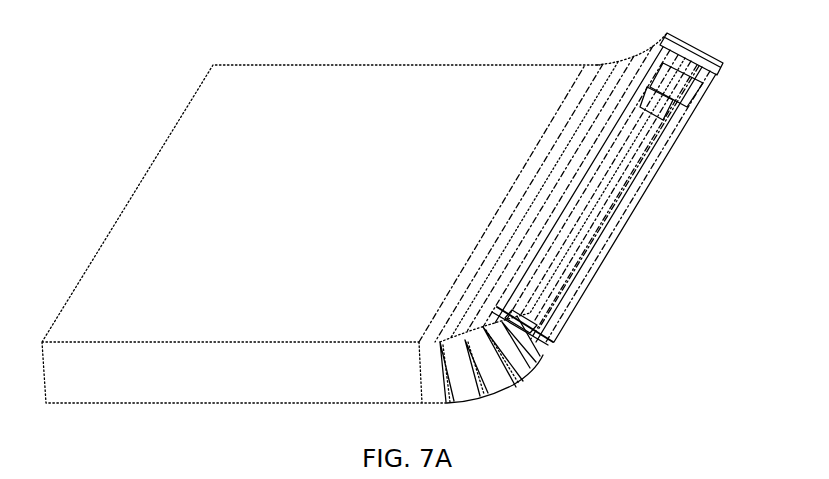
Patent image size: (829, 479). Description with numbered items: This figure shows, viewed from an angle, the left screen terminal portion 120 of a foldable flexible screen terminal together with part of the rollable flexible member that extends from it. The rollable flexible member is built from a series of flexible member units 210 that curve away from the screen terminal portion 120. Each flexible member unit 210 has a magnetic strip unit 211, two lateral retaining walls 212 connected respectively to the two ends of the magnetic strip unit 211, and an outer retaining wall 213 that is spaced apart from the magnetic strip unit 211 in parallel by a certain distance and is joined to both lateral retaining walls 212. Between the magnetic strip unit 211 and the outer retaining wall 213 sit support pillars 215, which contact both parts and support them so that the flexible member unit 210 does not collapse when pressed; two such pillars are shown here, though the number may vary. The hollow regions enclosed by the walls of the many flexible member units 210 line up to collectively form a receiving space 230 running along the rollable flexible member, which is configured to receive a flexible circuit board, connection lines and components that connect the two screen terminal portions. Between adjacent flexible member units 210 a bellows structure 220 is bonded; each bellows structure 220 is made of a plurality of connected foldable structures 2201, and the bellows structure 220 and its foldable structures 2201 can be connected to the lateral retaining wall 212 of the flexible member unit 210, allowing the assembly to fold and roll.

The screen terminal portion 120 is at (168, 185).
The flexible member unit 210 is at (538, 235).
The magnetic strip unit 211 is at (653, 50).
The lateral retaining wall 212 is at (527, 352).
The outer retaining wall 213 is at (705, 98).
The support pillar 215 is at (673, 98).
The receiving space 230 is at (617, 172).
The bellows structure 220 is at (553, 342).
The foldable structure 2201 is at (557, 344).